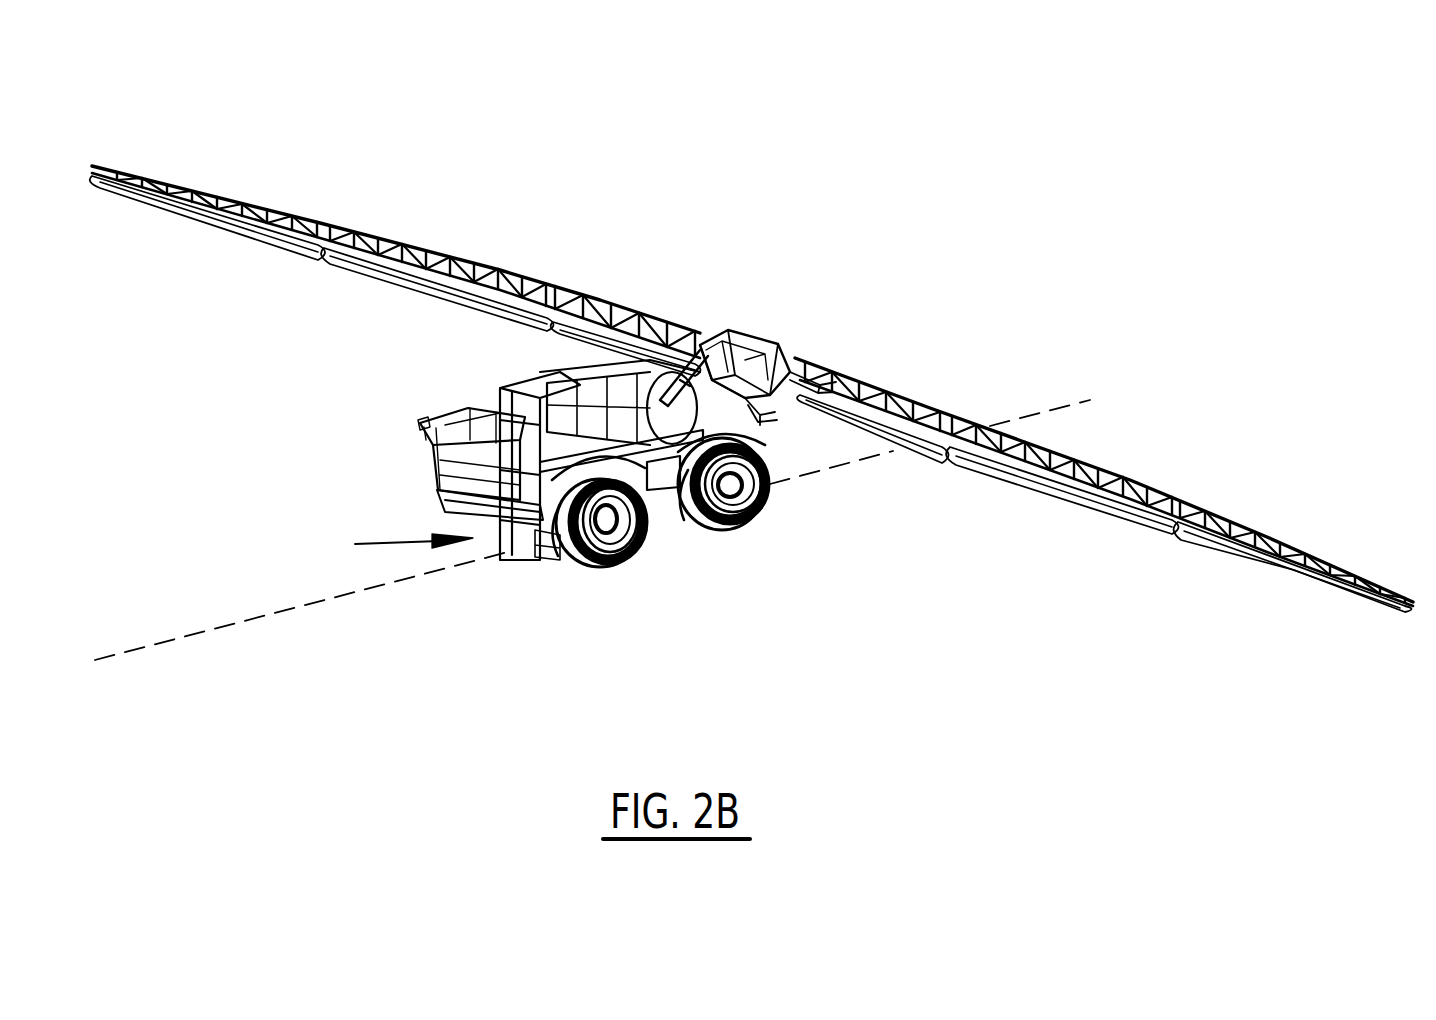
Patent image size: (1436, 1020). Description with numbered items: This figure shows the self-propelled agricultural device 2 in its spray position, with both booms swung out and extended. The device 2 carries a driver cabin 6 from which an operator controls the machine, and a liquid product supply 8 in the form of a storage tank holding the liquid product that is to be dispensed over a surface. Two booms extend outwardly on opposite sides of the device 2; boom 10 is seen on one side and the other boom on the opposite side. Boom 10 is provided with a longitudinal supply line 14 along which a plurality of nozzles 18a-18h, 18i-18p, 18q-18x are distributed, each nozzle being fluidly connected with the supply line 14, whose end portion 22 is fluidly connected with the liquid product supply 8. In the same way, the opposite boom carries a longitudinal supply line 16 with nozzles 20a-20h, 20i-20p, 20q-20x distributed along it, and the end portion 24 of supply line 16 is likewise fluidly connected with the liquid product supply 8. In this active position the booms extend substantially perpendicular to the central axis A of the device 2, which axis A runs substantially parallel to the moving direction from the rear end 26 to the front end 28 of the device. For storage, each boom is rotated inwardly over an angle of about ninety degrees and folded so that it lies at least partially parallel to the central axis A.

The agricultural device 2 is at (892, 175).
The driver cabin 6 is at (443, 455).
The liquid product supply 8 is at (657, 422).
The boom 10 is at (875, 382).
The longitudinal supply line 14 is at (1120, 500).
The longitudinal supply line 16 is at (344, 240).
The nozzles 18a-18h is at (853, 440).
The nozzles 18i-18p is at (1052, 497).
The nozzles 18q-18x is at (1282, 574).
The nozzles 20a-20h is at (612, 335).
The nozzles 20i-20p is at (423, 297).
The nozzles 20q-20x is at (190, 222).
The end portion 22 is at (768, 410).
The end portion 24 is at (714, 328).
The rear end 26 is at (755, 333).
The front end 28 is at (396, 535).
The central axis A is at (592, 514).